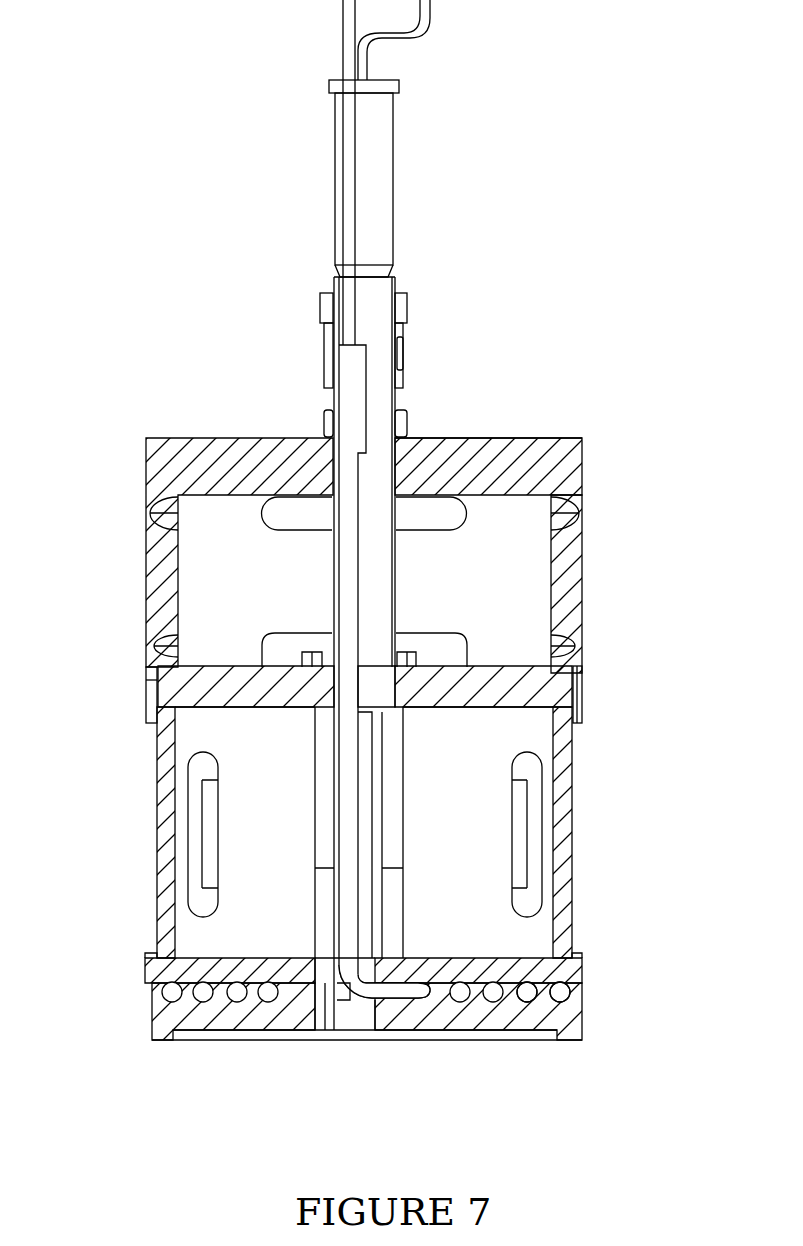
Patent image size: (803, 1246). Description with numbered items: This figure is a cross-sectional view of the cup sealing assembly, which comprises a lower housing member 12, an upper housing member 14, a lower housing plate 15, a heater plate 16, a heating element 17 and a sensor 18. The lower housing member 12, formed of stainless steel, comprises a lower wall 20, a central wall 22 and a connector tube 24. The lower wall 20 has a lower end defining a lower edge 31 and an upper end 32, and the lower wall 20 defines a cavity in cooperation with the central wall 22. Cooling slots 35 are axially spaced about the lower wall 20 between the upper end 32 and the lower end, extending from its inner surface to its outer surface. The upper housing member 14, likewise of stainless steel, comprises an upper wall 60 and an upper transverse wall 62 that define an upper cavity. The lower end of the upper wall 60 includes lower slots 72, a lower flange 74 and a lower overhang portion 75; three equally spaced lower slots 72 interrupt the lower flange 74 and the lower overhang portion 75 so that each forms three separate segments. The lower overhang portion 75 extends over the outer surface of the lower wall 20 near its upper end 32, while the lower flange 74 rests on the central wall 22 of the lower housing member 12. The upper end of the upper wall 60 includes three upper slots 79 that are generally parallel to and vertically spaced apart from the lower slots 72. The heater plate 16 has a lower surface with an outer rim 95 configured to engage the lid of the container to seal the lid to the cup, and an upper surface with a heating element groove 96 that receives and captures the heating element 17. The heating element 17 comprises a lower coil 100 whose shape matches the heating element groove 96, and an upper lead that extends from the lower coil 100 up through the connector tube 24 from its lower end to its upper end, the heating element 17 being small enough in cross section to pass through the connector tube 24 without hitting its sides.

The lower housing member 12 is at (128, 790).
The upper housing member 14 is at (130, 468).
The lower housing plate 15 is at (145, 965).
The heater plate 16 is at (148, 1022).
The heating element 17 is at (335, 168).
The sensor 18 is at (393, 180).
The lower wall 20 is at (572, 845).
The central wall 22 is at (508, 666).
The connector tube 24 is at (397, 393).
The lower edge 31 is at (575, 955).
The upper end 32 is at (553, 712).
The cooling slots 35 is at (192, 833).
The upper wall 60 is at (582, 558).
The upper transverse wall 62 is at (525, 437).
The lower slots 72 is at (262, 660).
The lower flange 74 is at (585, 650).
The lower overhang portion 75 is at (583, 700).
The upper slots 79 is at (262, 512).
The outer rim 95 is at (563, 1040).
The heating element groove 96 is at (543, 997).
The lower coil 100 is at (543, 997).